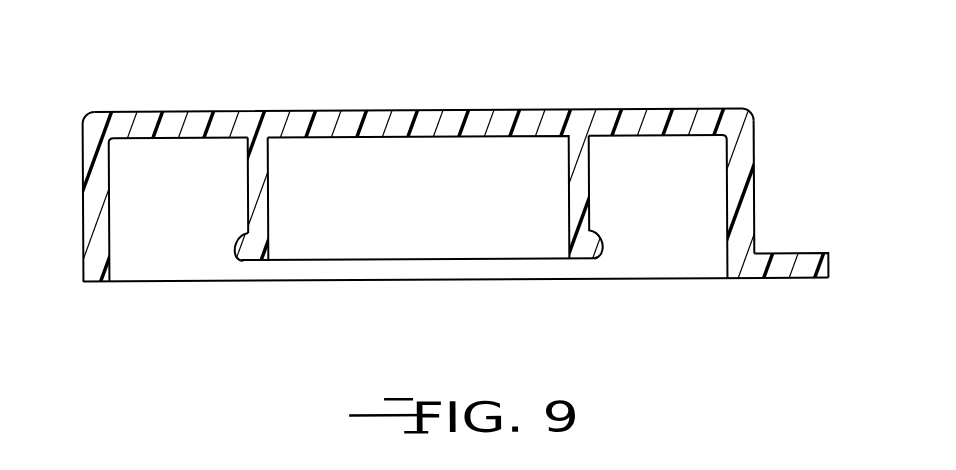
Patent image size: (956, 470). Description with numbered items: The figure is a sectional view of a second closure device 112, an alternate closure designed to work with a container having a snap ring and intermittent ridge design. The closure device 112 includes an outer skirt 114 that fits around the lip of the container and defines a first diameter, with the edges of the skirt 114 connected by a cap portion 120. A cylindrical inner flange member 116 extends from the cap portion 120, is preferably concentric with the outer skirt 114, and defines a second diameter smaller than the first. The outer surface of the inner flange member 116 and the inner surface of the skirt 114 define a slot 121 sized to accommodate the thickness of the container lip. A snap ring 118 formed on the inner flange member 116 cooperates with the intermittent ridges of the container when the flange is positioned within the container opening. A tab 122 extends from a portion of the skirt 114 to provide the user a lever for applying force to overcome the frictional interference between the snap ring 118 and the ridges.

The second closure device 112 is at (406, 58).
The outer skirt 114 is at (82, 218).
The inner flange member 116 is at (247, 203).
The snap ring 118 is at (252, 262).
The cap portion 120 is at (487, 110).
The slot 121 is at (153, 257).
The tab 122 is at (797, 255).